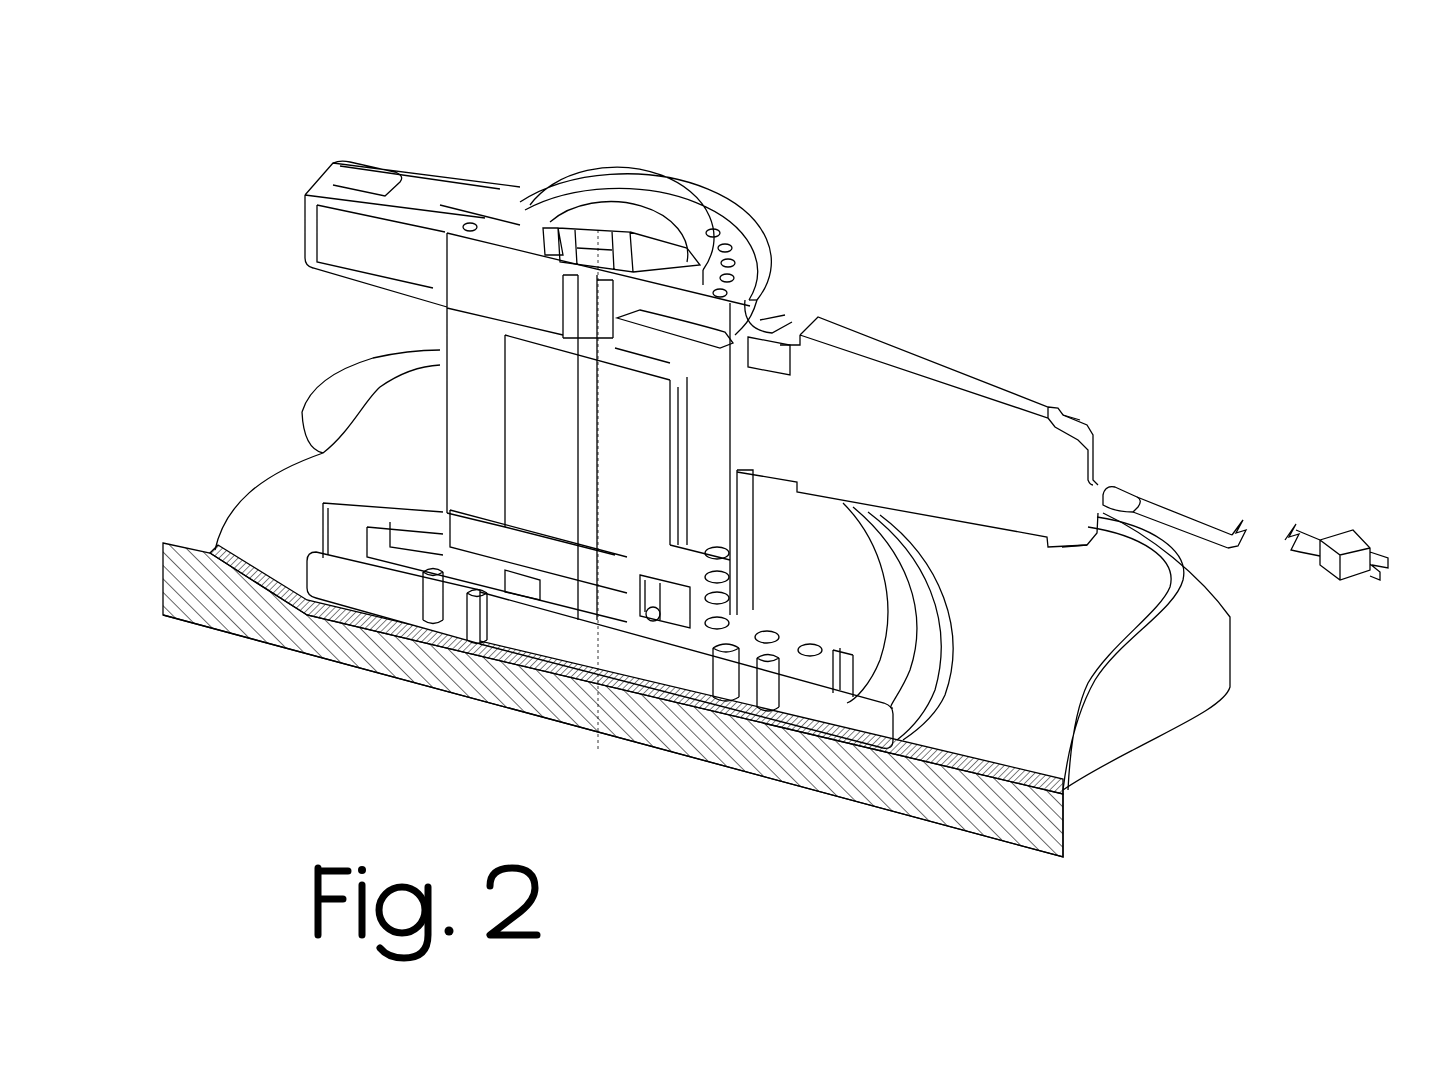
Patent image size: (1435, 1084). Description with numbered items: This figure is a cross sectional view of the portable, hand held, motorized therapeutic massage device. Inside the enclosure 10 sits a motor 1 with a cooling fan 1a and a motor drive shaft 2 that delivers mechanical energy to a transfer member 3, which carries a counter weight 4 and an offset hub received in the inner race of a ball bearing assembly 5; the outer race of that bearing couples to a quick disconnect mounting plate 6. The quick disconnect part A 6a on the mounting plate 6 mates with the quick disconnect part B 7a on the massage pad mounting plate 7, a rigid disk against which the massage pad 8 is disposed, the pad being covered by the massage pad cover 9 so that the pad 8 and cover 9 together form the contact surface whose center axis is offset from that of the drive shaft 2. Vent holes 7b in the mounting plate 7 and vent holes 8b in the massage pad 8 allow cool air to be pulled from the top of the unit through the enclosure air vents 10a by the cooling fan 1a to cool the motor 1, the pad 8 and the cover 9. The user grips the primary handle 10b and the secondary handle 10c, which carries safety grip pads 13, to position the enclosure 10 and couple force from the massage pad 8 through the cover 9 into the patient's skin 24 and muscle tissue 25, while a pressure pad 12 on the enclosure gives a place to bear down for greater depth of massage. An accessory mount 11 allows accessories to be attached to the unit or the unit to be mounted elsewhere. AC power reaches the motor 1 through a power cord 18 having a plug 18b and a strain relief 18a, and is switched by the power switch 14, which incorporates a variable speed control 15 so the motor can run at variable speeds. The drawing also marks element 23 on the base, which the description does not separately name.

The motor 1 is at (505, 362).
The cooling fan 1a is at (773, 320).
The motor drive shaft 2 is at (582, 452).
The transfer member 3 is at (650, 573).
The counter weight 4 is at (392, 522).
The ball bearing assembly 5 is at (673, 598).
The quick disconnect mounting plate 6 is at (697, 612).
The quick disconnect part A 6a is at (668, 613).
The massage pad mounting plate 7 is at (360, 522).
The quick disconnect part B 7a is at (525, 580).
The vent holes 7b is at (733, 656).
The massage pad 8 is at (357, 565).
The vent holes 8b is at (730, 700).
The massage pad cover 9 is at (303, 593).
The enclosure 10 is at (740, 238).
The enclosure air vents 10a is at (714, 230).
The primary handle 10b is at (1097, 438).
The secondary handle 10c is at (367, 162).
The accessory mount 11 is at (604, 247).
The pressure pad 12 is at (647, 188).
The safety grip pads 13 is at (311, 177).
The power switch 14 is at (783, 307).
The variable speed control 15 is at (772, 317).
The power cord 18 is at (1212, 529).
The strain relief 18a is at (1122, 491).
The plug 18b is at (1352, 542).
The base plate 23 is at (903, 745).
The patient's skin 24 is at (957, 752).
The patient's muscle tissue 25 is at (953, 830).